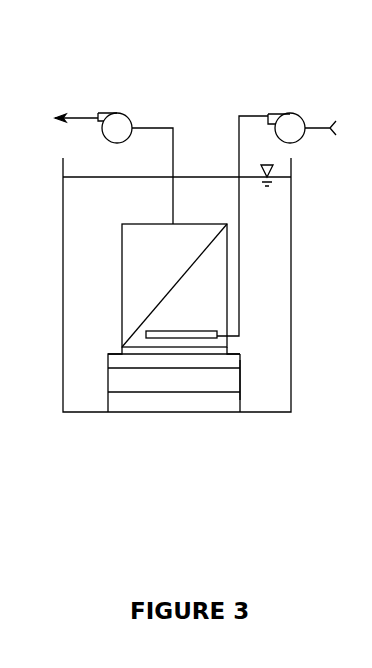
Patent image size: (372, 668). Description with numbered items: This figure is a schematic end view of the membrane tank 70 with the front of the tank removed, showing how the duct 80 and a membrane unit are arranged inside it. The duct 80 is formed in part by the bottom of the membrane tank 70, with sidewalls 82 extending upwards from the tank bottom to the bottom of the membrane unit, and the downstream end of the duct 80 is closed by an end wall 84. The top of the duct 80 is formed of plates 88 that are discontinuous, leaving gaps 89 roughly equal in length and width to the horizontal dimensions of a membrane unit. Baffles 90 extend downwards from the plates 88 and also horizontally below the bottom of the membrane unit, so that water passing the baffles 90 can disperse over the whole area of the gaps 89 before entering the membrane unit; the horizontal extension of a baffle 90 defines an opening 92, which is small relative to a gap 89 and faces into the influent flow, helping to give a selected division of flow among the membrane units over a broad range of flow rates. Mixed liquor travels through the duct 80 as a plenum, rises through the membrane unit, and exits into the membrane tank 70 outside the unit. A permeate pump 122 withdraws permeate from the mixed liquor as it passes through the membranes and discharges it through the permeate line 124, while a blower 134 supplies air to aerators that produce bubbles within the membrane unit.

The membrane tank 70 is at (291, 383).
The duct 80 is at (105, 388).
The sidewalls 82 is at (240, 380).
The end wall 84 is at (218, 405).
The plates 88 is at (228, 350).
The gaps 89 is at (195, 352).
The baffles 90 is at (150, 368).
The opening 92 is at (112, 358).
The permeate pump 122 is at (118, 113).
The outlet 124 is at (83, 117).
The blower 134 is at (294, 113).